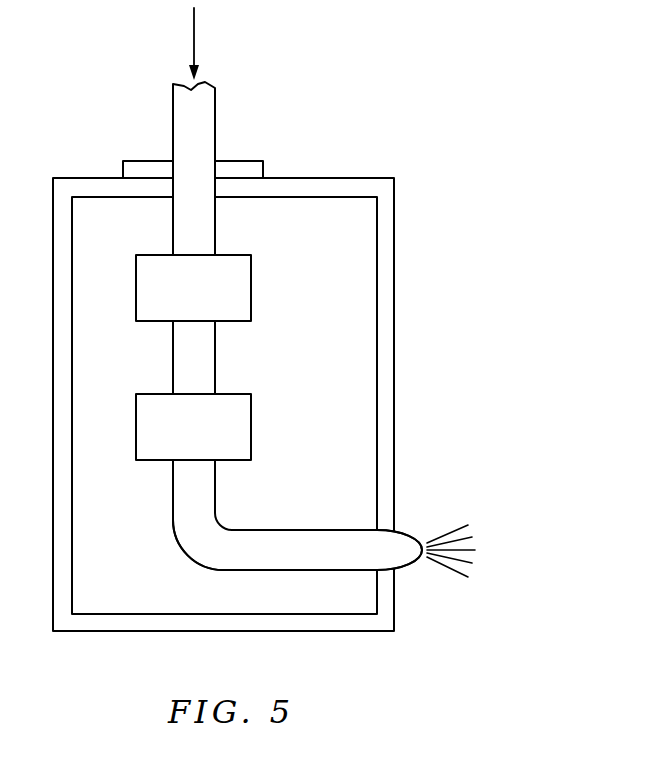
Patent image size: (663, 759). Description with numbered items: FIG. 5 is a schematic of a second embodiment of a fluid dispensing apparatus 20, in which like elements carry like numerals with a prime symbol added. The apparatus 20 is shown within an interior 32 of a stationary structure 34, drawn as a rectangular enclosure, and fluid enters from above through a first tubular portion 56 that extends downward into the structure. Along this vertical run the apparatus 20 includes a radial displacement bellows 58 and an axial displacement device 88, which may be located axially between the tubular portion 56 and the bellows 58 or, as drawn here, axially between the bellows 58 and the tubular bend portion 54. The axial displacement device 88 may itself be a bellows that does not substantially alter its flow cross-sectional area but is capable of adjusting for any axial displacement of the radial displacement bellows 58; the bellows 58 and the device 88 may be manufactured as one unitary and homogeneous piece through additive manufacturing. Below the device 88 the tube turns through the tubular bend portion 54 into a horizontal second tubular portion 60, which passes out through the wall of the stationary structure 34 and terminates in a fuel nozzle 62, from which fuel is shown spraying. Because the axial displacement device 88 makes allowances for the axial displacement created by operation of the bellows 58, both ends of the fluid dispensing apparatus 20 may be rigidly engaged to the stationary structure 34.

The fluid dispensing apparatus 20 is at (406, 104).
The interior chamber 32 is at (124, 370).
The stationary structure 34 is at (394, 255).
The tubular bend portion 54 is at (182, 545).
The first tubular portion 56 is at (215, 218).
The radial displacement bellows 58 is at (251, 283).
The second tubular portion 60 is at (298, 530).
The fuel nozzle 62 is at (410, 538).
The axial displacement device 88 is at (251, 421).